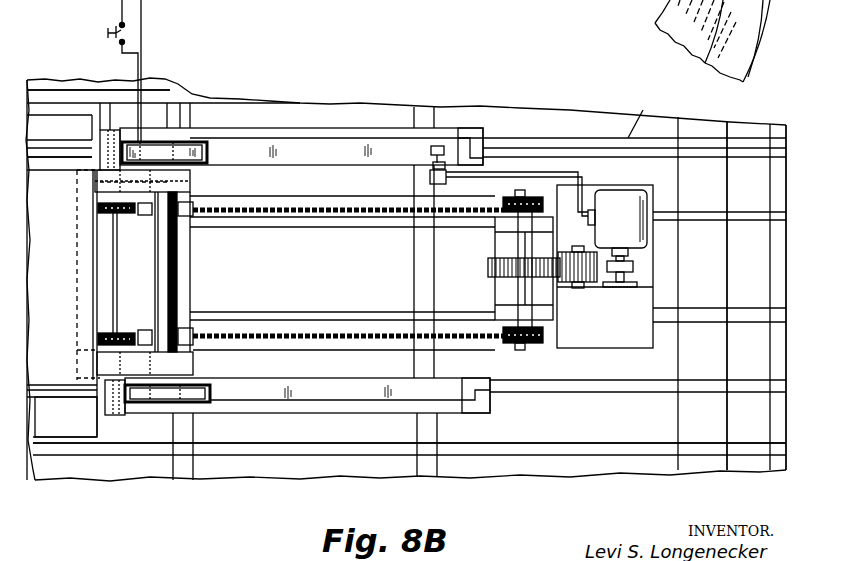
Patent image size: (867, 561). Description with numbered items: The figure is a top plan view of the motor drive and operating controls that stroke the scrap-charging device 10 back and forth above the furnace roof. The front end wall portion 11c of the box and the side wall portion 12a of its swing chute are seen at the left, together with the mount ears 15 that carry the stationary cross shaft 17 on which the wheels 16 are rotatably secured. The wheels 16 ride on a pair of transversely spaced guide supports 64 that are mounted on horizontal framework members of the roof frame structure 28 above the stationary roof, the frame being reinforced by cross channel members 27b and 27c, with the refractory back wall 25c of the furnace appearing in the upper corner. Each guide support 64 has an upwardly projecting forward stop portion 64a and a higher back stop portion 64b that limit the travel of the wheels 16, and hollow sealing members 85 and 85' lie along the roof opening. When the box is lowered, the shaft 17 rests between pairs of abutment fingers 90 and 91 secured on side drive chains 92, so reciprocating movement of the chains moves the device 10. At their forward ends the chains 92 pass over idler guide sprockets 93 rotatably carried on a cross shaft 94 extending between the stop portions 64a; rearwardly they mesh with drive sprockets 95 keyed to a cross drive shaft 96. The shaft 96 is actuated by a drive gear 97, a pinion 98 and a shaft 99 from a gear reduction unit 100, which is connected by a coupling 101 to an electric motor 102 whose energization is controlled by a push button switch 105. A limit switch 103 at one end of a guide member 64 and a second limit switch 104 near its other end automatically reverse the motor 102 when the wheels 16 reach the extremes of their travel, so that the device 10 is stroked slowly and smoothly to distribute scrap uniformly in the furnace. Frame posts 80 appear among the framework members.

The charging device 10 is at (77, 343).
The front end wall portion 11c is at (77, 262).
The vertical side wall portion of swing chute 12a is at (80, 405).
The mount ears 15 is at (192, 185).
The wheels 16 is at (207, 152).
The cross shaft 17 is at (178, 268).
The refractory back wall 25c is at (655, 32).
The cross channel member 27b is at (778, 128).
The cross channel member 27c is at (718, 170).
The roof frame structure 28 is at (643, 118).
The guide support 64 is at (327, 140).
The forward stop portion 64a is at (118, 147).
The back stop portion 64b is at (460, 143).
The post 80 is at (432, 113).
The hollow facing member 85 is at (406, 336).
The hollow side seal member 85' is at (98, 79).
The abutment finger 90 is at (190, 214).
The abutment finger 91 is at (145, 216).
The drive chain 92 is at (313, 207).
The idler guide sprocket 93 is at (107, 213).
The cross shaft 94 is at (118, 268).
The drive sprocket 95 is at (507, 201).
The cross drive shaft 96 is at (510, 292).
The drive gear 97 is at (490, 263).
The pinion 98 is at (592, 252).
The shaft 99 is at (593, 284).
The gear reduction unit 100 is at (632, 342).
The coupling 101 is at (635, 265).
The electric motor 102 is at (640, 178).
The limit switch 103 is at (96, 183).
The limit switch 104 is at (430, 178).
The push button switch 105 is at (118, 23).